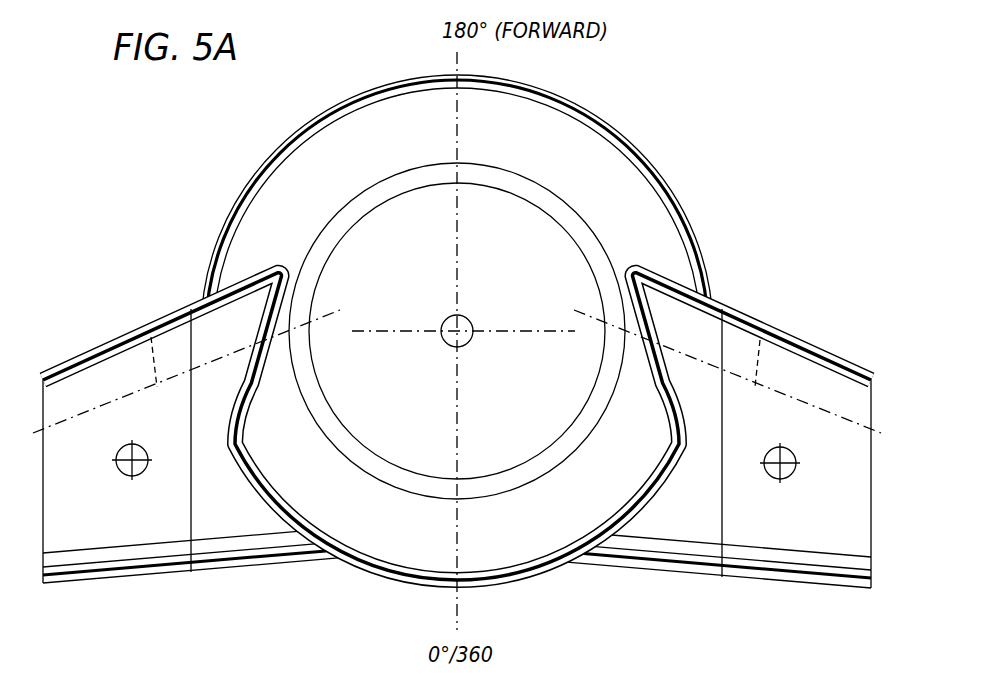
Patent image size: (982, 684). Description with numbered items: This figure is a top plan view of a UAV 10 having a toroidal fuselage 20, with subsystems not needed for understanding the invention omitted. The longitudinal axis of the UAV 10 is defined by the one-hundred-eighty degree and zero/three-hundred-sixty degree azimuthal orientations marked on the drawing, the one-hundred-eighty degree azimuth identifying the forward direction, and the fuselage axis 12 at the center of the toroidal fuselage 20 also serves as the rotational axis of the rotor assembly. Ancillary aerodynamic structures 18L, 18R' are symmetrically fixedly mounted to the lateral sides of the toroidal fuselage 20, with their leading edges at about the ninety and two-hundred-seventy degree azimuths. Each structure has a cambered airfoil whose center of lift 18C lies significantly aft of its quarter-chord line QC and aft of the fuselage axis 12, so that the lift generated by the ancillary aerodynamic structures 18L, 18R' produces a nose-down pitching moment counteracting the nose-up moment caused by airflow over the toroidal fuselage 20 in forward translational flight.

The UAV 10 is at (635, 132).
The fuselage axis 12 is at (466, 320).
The toroidal fuselage 20 is at (210, 179).
The ancillary aerodynamic structure 18L is at (97, 330).
The ancillary aerodynamic structure 18R' is at (719, 521).
The center of lift 18C is at (114, 514).
The quarter-chord line QC is at (151, 327).